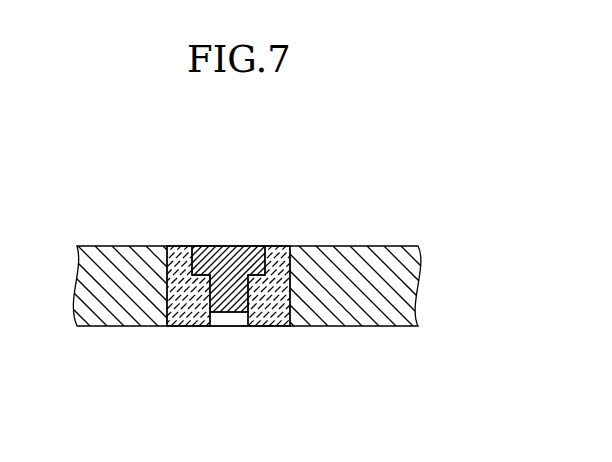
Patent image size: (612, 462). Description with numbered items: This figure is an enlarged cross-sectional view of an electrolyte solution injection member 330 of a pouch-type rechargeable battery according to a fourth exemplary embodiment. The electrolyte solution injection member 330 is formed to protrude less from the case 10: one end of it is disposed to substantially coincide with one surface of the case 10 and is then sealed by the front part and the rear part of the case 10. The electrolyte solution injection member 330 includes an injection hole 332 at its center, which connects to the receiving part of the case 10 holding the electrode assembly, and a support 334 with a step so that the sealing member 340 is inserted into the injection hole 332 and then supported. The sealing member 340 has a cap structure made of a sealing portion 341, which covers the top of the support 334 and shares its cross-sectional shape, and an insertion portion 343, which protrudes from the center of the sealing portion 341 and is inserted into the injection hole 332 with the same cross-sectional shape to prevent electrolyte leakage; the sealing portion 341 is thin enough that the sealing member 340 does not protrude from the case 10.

The case 10 is at (367, 310).
The electrolyte solution injection member 330 is at (193, 313).
The injection hole 332 is at (243, 314).
The support 334 is at (272, 292).
The sealing member 340 is at (225, 242).
The sealing portion 341 is at (202, 262).
The insertion portion 343 is at (170, 191).